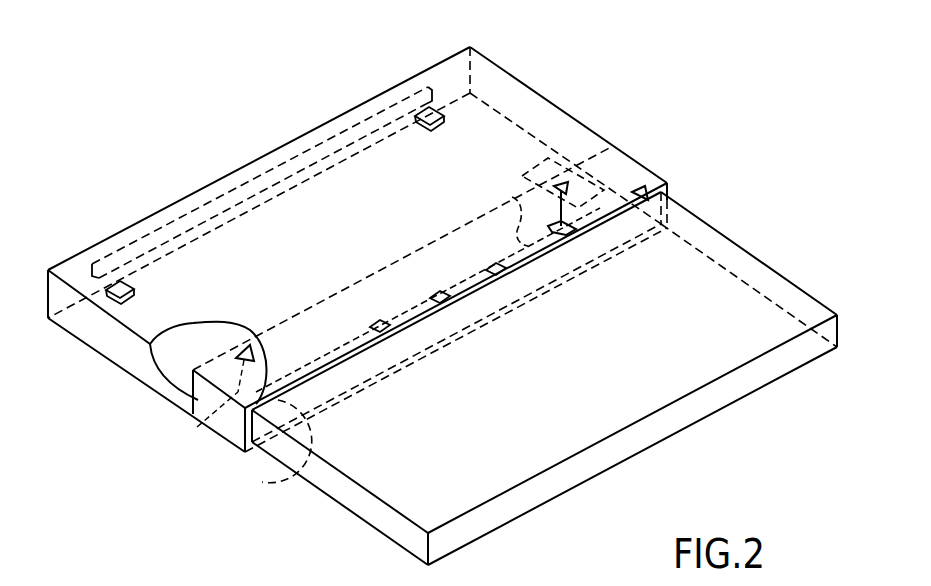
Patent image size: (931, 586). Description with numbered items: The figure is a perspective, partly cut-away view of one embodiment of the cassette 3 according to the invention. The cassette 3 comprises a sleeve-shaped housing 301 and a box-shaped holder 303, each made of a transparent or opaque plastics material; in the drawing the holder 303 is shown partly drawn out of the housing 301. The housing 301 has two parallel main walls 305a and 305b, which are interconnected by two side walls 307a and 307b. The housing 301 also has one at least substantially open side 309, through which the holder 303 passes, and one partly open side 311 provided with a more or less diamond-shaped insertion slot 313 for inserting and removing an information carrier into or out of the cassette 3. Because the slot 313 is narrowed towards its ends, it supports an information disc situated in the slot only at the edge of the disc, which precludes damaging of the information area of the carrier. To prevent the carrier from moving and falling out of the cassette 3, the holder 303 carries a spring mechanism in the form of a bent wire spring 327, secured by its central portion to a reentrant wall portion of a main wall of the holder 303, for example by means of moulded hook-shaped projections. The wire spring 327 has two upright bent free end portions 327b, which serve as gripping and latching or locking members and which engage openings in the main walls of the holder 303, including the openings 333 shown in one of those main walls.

The cassette 3 is at (720, 183).
The sleeve-shaped housing 301 is at (483, 52).
The box-shaped holder 303 is at (760, 258).
The main wall 305a is at (566, 140).
The main wall 305b is at (585, 135).
The side wall 307a is at (147, 387).
The side wall 307b is at (514, 96).
The open side 309 is at (268, 478).
The partly open side 311 is at (446, 78).
The insertion slot 313 is at (350, 130).
The wire spring 327 is at (512, 197).
The free end portions 327b is at (642, 184).
The openings 333 is at (598, 156).